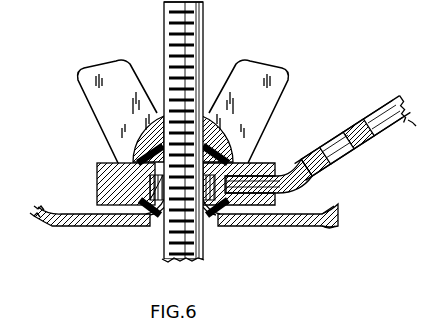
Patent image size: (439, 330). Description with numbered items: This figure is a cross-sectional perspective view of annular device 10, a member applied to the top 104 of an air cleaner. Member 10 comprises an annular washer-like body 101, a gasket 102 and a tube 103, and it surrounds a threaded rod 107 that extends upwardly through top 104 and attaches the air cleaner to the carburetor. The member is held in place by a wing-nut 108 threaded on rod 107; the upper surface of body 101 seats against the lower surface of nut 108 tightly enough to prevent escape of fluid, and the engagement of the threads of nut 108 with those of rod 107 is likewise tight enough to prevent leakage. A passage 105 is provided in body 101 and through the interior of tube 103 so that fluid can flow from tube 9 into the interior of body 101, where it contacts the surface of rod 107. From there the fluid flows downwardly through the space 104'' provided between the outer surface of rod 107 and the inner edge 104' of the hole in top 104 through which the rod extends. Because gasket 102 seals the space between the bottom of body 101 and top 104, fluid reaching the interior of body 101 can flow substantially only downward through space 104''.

The tube 9 is at (355, 135).
The annular device 10 is at (321, 135).
The annular washer-like body 101 is at (105, 167).
The gasket 102 is at (238, 220).
The tube 103 is at (292, 168).
The top of air cleaner 104 is at (184, 230).
The inner edge of the hole in top 104' is at (195, 236).
The space 104'' is at (131, 218).
The passage 105 is at (311, 181).
The threaded rod 107 is at (201, 22).
The wing-nut 108 is at (270, 66).